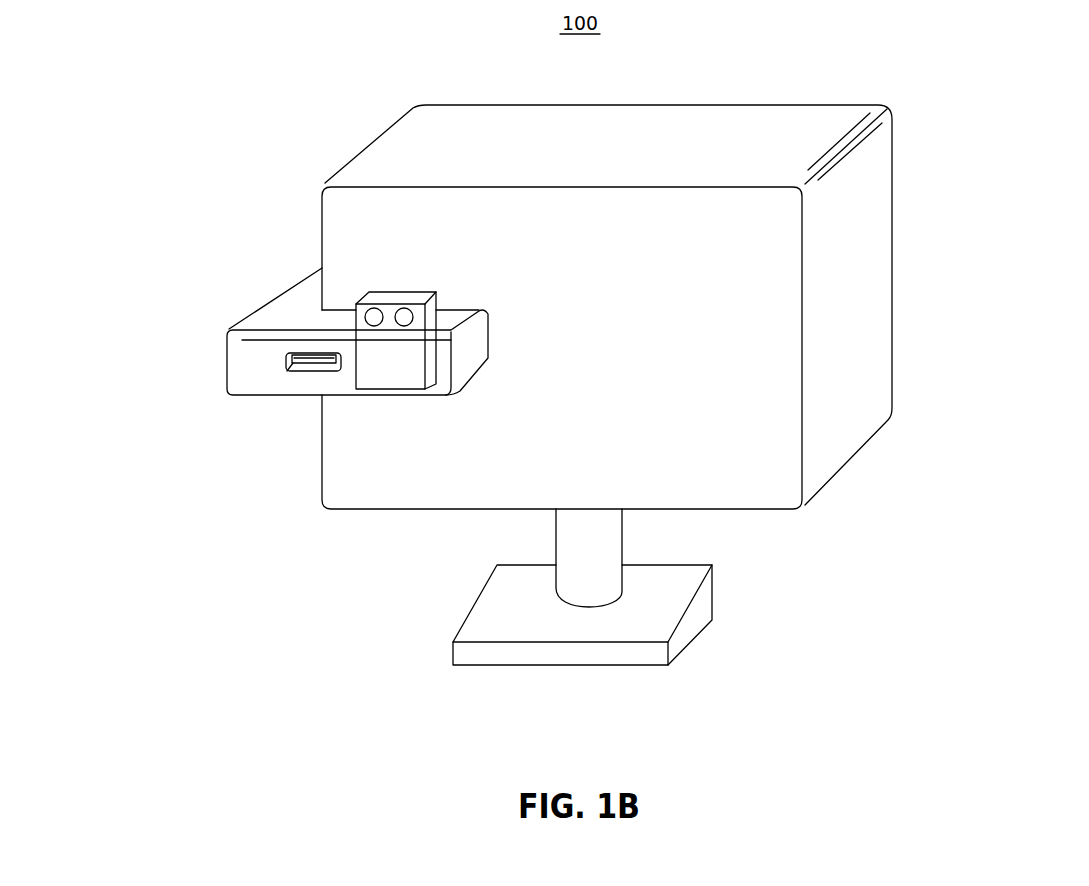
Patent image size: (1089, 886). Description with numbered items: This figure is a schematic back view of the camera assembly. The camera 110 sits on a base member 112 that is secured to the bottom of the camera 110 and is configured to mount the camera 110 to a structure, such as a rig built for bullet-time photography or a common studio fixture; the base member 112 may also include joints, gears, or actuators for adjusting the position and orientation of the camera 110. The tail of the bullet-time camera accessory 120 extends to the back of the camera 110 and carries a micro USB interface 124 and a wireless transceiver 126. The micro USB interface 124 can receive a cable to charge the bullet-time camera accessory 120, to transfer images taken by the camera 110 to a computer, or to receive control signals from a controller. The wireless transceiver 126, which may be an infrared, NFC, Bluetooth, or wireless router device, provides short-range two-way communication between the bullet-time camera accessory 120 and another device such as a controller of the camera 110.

The camera 110 is at (893, 292).
The base member 112 is at (465, 618).
The bullet-time camera accessory 120 is at (240, 316).
The micro USB interface 124 is at (286, 365).
The wireless transceiver 126 is at (427, 289).